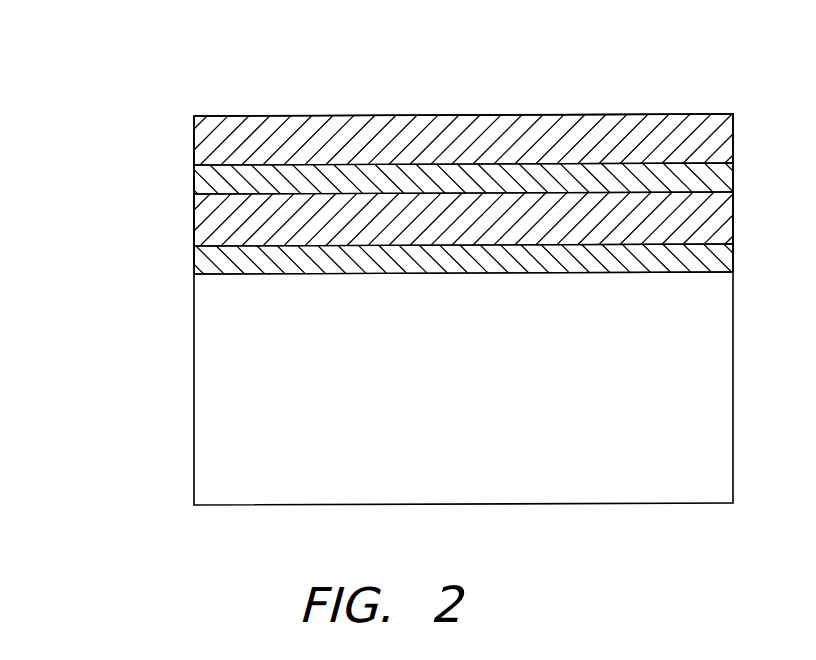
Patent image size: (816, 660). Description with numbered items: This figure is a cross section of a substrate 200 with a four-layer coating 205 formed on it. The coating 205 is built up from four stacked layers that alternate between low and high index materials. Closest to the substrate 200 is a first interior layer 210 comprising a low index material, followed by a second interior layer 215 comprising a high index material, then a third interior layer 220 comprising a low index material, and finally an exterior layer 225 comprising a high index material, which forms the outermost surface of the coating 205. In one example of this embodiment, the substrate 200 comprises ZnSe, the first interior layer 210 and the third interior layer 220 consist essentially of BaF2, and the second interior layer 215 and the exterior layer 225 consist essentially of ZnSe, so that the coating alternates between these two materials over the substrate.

The substrate 200 is at (298, 473).
The four-layer coating 205 is at (227, 80).
The first interior layer 210 is at (194, 265).
The second interior layer 215 is at (194, 228).
The third interior layer 220 is at (194, 182).
The exterior layer 225 is at (194, 145).